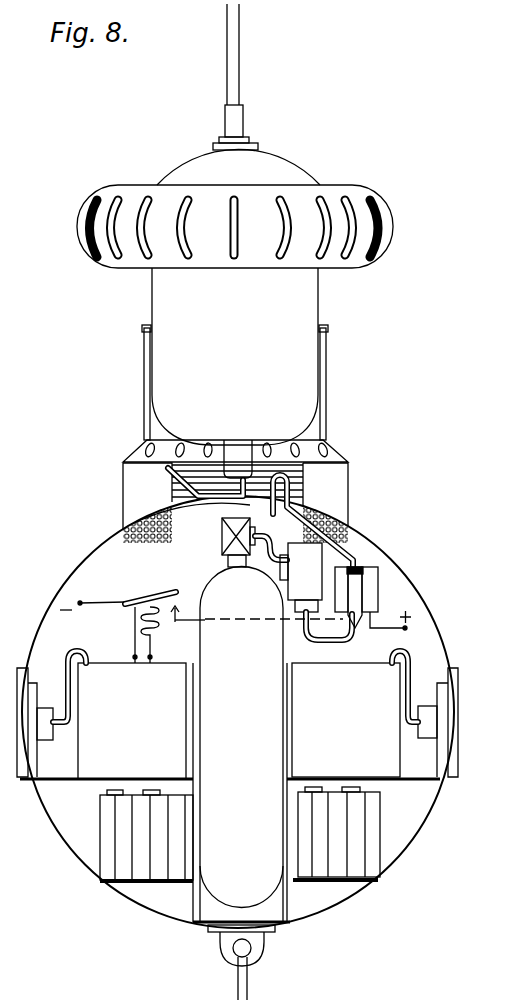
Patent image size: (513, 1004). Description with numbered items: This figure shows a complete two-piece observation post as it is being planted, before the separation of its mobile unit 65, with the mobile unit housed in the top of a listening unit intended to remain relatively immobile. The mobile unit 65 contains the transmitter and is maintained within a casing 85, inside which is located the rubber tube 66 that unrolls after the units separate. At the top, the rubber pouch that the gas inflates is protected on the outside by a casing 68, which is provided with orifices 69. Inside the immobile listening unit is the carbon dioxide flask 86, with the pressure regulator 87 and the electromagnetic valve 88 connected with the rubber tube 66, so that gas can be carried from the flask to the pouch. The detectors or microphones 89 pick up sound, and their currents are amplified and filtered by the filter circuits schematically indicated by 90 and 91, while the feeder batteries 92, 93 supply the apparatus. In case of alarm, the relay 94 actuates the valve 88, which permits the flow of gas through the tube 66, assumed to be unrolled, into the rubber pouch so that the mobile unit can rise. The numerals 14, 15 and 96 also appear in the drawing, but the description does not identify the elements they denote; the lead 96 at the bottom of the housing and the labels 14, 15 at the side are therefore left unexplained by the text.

The spherical housing 14 is at (512, 494).
The housing wall 15 is at (512, 470).
The mobile part of the observation post 65 is at (235, 373).
The rubber tube 66 is at (123, 466).
The casing 68 is at (78, 215).
The orifices 69 is at (86, 250).
The casing 85 is at (326, 384).
The carbon dioxide flask 86 is at (241, 745).
The pressure regulator 87 is at (301, 577).
The electromagnetic valve 88 is at (356, 595).
The detectors or microphones 89 is at (30, 778).
The filter circuits 90 is at (132, 721).
The filter circuits 91 is at (346, 720).
The feeder battery 92 is at (118, 880).
The feeder battery 93 is at (372, 866).
The relay 94 is at (133, 620).
The cable 96 is at (238, 983).